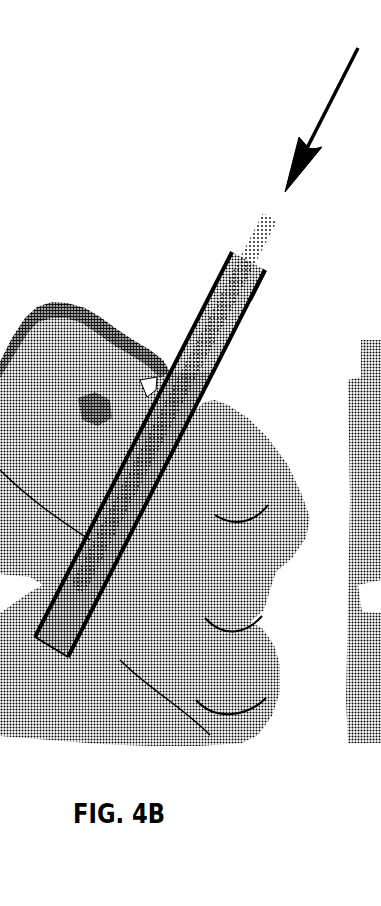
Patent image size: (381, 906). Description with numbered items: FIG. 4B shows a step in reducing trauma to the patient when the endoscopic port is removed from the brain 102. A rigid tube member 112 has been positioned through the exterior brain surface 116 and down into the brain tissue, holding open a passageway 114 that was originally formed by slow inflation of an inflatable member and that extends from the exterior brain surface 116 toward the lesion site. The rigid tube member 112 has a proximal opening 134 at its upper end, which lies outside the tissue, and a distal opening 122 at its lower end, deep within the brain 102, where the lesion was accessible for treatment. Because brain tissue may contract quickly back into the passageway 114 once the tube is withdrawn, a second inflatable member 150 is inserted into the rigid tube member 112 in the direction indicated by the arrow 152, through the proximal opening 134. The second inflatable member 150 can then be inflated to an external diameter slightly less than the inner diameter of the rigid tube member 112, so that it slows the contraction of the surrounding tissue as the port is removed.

The brain 102 is at (181, 683).
The rigid tube member 112 is at (258, 297).
The passageway 114 is at (123, 455).
The exterior brain surface 116 is at (151, 394).
The distal opening 122 is at (40, 640).
The proximal opening 134 is at (260, 267).
The second inflatable member 150 is at (262, 219).
The arrow 152 is at (345, 72).